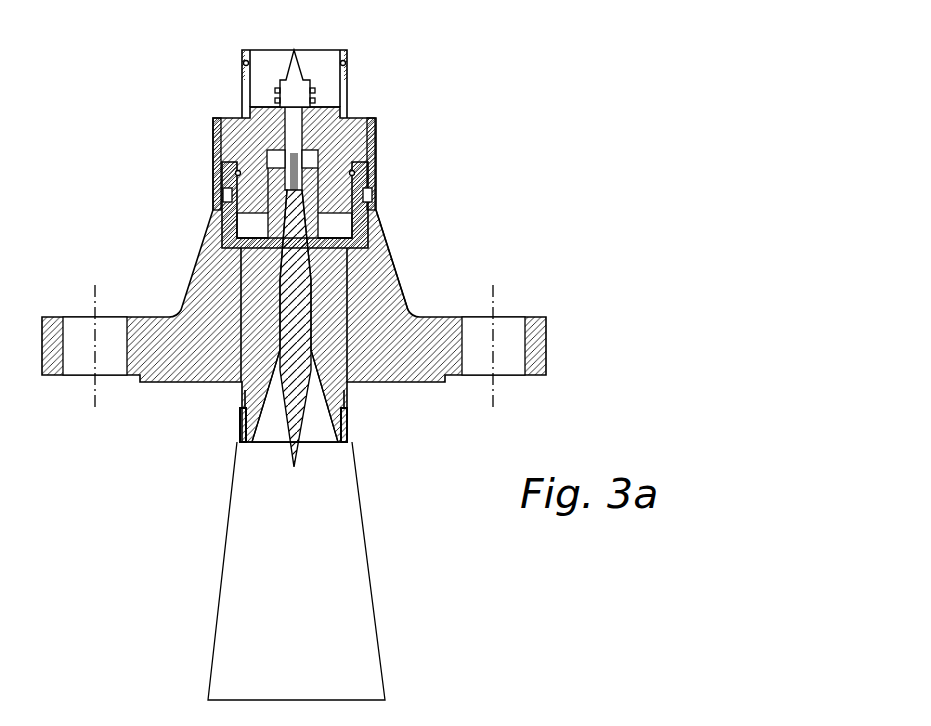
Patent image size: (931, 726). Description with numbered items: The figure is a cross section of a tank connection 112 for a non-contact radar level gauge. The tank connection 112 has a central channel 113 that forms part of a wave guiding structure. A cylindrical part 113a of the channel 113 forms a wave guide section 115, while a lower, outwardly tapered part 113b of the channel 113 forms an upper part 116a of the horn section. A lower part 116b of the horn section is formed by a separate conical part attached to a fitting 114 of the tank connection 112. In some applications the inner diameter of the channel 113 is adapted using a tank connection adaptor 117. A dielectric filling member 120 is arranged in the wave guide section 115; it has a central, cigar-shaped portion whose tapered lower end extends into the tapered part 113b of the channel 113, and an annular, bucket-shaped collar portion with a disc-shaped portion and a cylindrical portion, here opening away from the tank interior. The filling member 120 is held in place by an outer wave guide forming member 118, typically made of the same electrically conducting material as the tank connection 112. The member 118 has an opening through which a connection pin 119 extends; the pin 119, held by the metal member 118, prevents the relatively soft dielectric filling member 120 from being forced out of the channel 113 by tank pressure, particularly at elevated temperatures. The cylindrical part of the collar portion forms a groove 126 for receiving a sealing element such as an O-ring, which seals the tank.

The tank connection 112 is at (400, 290).
The central channel 113 is at (310, 332).
The cylindrical part 113a is at (310, 258).
The outwardly tapered part 113b is at (347, 422).
The fitting 114 is at (317, 420).
The wave guide section 115 is at (280, 313).
The upper part of the horn section 116a is at (242, 413).
The lower part of the horn section 116b is at (372, 575).
The tank connection adaptor 117 is at (333, 288).
The outer wave guide forming member 118 is at (247, 221).
The connection pin 119 is at (297, 152).
The dielectric filling member 120 is at (279, 272).
The groove 126 is at (376, 200).